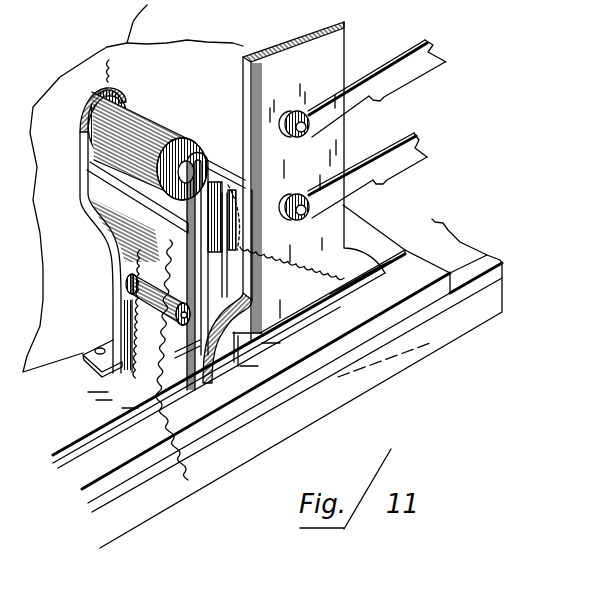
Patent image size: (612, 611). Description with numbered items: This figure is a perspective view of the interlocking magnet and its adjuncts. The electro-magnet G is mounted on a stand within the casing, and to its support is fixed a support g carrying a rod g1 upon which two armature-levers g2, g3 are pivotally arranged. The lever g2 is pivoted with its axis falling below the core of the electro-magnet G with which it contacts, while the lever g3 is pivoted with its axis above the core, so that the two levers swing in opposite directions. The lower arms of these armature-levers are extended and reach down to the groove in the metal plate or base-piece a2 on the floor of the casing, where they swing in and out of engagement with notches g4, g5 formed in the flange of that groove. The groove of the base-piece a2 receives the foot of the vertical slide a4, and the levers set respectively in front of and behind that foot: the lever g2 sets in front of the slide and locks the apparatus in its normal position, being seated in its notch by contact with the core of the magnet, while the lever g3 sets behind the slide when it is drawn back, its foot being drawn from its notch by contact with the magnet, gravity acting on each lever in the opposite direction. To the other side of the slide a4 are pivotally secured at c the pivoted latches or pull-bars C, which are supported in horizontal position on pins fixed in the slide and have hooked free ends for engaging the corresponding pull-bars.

The electro-magnet G is at (88, 159).
The support g is at (213, 179).
The rod g1 is at (230, 262).
The armature-lever g2 is at (193, 266).
The armature-lever g3 is at (233, 279).
The notch g4 is at (165, 383).
The notch g5 is at (186, 346).
The pivoted latches or pull-bars C is at (377, 129).
The pivot c is at (299, 172).
The vertical slide a4 is at (309, 194).
The metal plate a2 is at (277, 376).
The cover plate b is at (250, 360).